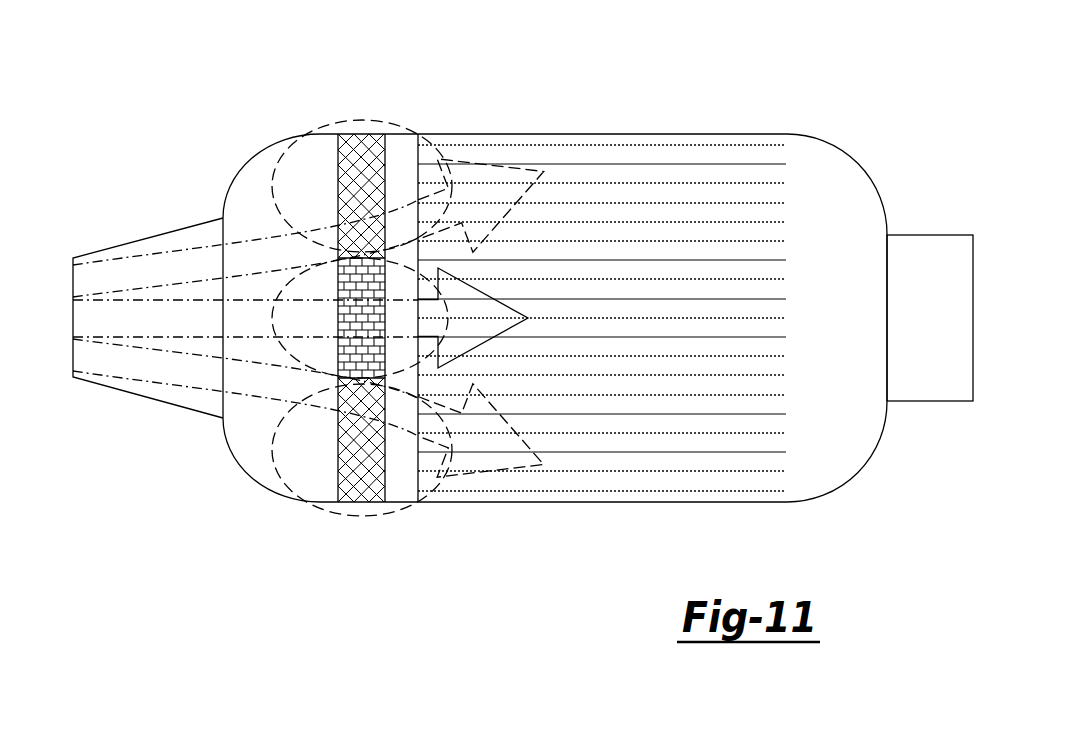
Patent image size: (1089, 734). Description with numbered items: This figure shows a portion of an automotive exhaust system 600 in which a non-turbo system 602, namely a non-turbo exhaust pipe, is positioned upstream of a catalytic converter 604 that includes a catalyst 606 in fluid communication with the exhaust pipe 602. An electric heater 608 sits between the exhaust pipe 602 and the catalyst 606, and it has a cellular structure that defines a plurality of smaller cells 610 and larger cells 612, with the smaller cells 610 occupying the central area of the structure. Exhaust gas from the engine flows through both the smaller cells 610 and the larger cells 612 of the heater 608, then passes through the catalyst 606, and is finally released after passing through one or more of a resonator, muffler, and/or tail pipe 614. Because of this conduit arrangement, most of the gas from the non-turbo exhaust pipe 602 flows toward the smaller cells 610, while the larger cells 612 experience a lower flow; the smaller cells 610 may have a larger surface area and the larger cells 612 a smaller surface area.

The automotive exhaust system 600 is at (554, 299).
The non-turbo system 602 is at (148, 397).
The catalytic converter 604 is at (602, 135).
The catalyst 606 is at (695, 175).
The electric heater 608 is at (337, 178).
The smaller cells 610 is at (298, 360).
The larger cells 612 is at (314, 503).
The resonator, muffler, and/or tail pipe 614 is at (948, 270).